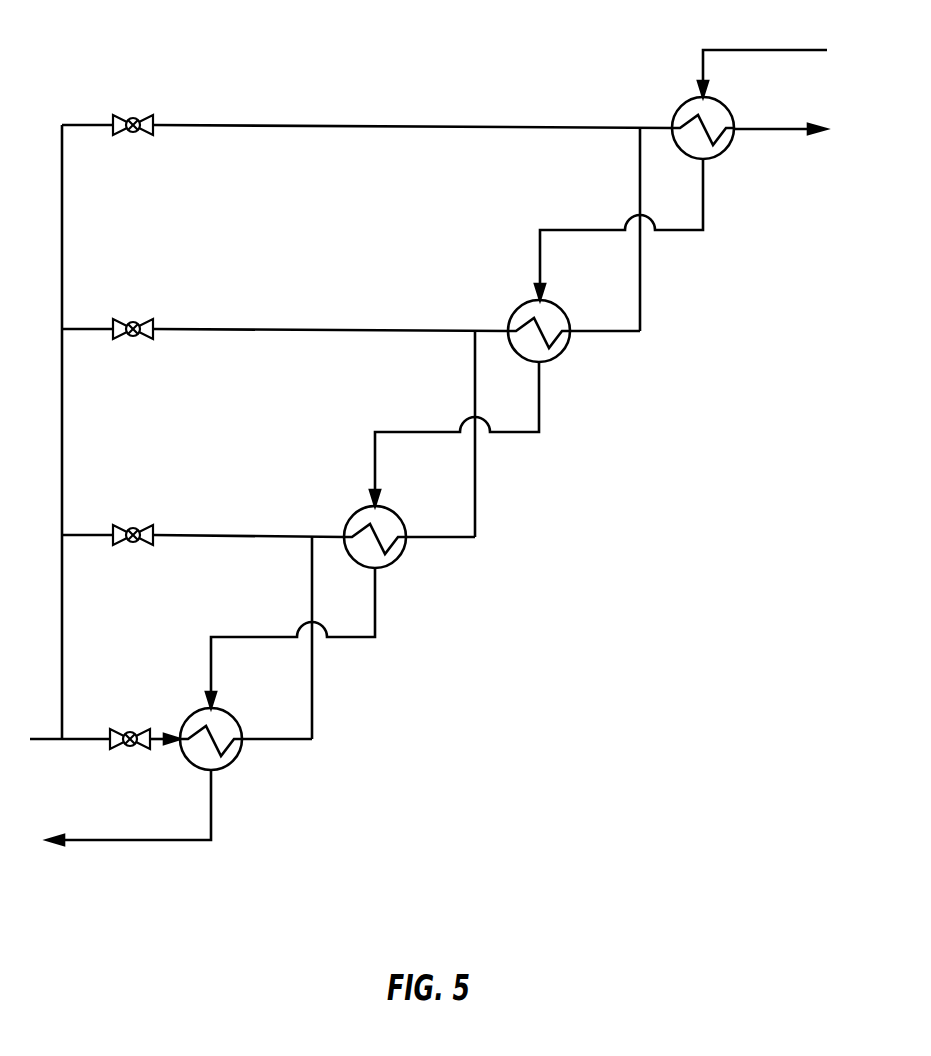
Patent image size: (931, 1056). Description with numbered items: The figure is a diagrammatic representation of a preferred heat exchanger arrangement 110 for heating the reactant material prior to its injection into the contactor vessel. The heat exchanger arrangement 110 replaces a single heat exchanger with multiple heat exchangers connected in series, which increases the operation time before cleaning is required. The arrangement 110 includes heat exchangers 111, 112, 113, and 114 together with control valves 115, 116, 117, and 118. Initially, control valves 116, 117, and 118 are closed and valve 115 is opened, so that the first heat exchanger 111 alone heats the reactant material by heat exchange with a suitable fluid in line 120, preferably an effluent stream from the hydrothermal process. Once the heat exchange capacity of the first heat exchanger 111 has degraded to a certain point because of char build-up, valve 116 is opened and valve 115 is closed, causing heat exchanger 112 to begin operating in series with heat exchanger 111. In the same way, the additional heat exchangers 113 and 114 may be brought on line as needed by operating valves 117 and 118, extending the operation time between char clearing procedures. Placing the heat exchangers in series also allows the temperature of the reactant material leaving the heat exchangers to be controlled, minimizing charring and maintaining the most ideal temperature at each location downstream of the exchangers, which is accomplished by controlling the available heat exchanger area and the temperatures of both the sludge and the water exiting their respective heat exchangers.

The heat exchanger arrangement 110 is at (603, 737).
The first heat exchanger 111 is at (661, 110).
The heat exchanger 112 is at (496, 314).
The heat exchanger 113 is at (332, 519).
The heat exchanger 114 is at (170, 720).
The control valve 115 is at (169, 101).
The control valve 116 is at (168, 307).
The control valve 117 is at (168, 511).
The control valve 118 is at (93, 763).
The line 120 is at (762, 49).